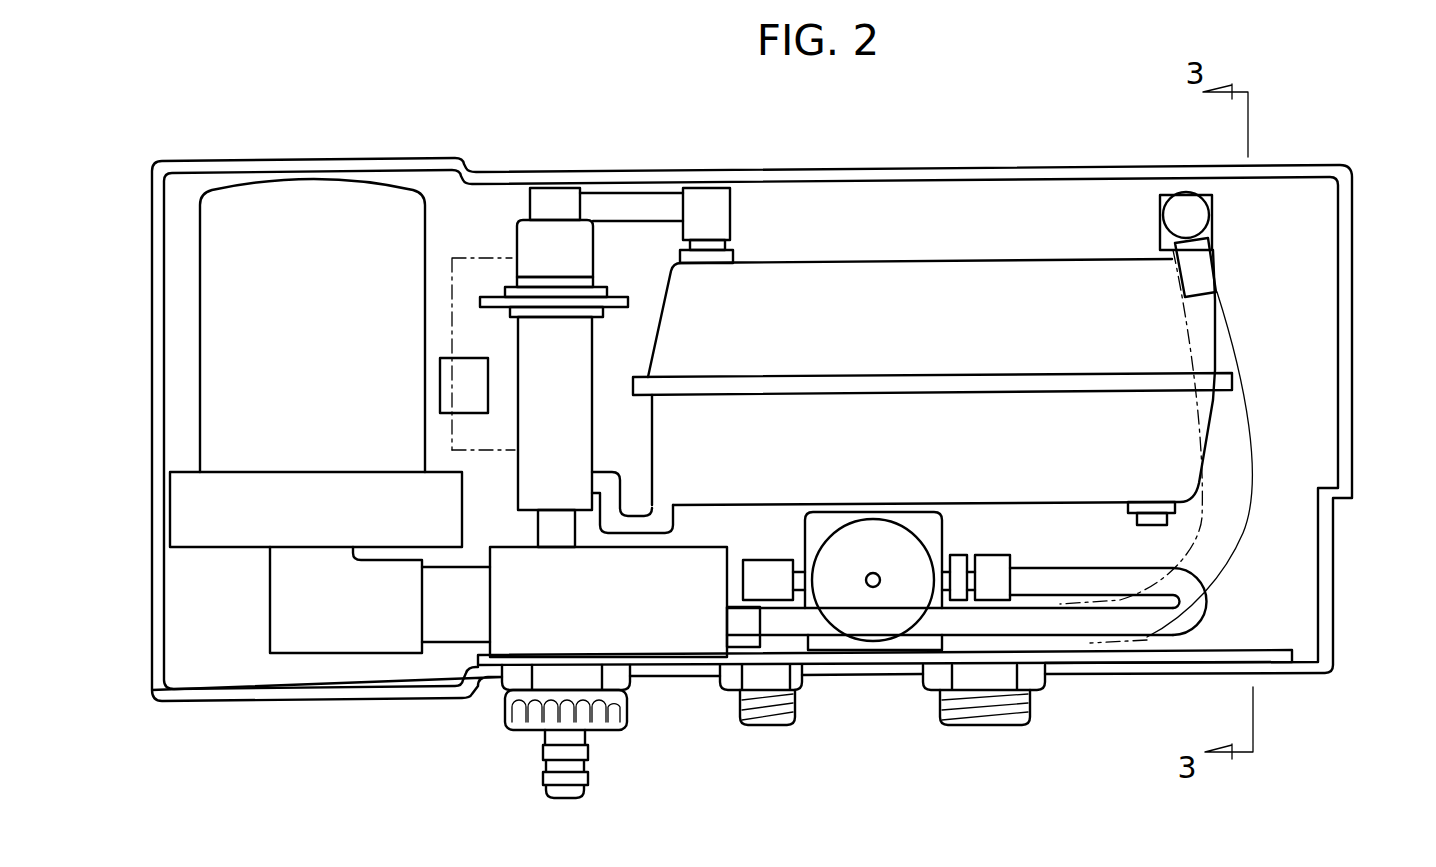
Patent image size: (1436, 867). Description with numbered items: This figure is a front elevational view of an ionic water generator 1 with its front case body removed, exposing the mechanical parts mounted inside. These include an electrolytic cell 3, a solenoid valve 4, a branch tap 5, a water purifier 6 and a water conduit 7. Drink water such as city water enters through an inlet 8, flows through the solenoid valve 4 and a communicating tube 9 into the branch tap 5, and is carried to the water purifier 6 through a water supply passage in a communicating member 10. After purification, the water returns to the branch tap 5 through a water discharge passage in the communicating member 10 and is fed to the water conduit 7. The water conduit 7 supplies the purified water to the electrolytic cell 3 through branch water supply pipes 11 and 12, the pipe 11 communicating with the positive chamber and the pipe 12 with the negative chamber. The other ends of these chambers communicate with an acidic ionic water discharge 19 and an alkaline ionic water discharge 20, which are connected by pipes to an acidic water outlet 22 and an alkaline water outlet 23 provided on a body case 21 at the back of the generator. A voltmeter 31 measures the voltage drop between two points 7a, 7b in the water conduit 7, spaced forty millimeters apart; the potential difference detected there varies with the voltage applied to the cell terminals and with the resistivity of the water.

The ionic water generator 1 is at (132, 158).
The electrolytic cell 3 is at (908, 275).
The solenoid valve 4 is at (902, 585).
The branch tap 5 is at (707, 645).
The water purifier 6 is at (316, 187).
The water conduit 7 is at (573, 388).
The point 7a is at (512, 258).
The point 7b is at (515, 452).
The inlet 8 is at (763, 728).
The communicating tube 9 is at (830, 625).
The communicating member 10 is at (333, 642).
The branch water supply pipe 11 is at (705, 197).
The branch water supply pipe 12 is at (655, 523).
The acidic ionic water discharge 19 is at (1153, 527).
The alkaline ionic water discharge 20 is at (1202, 268).
The body case 21 is at (1090, 668).
The acidic water outlet 22 is at (562, 800).
The alkaline water outlet 23 is at (993, 728).
The voltmeter 31 is at (452, 390).